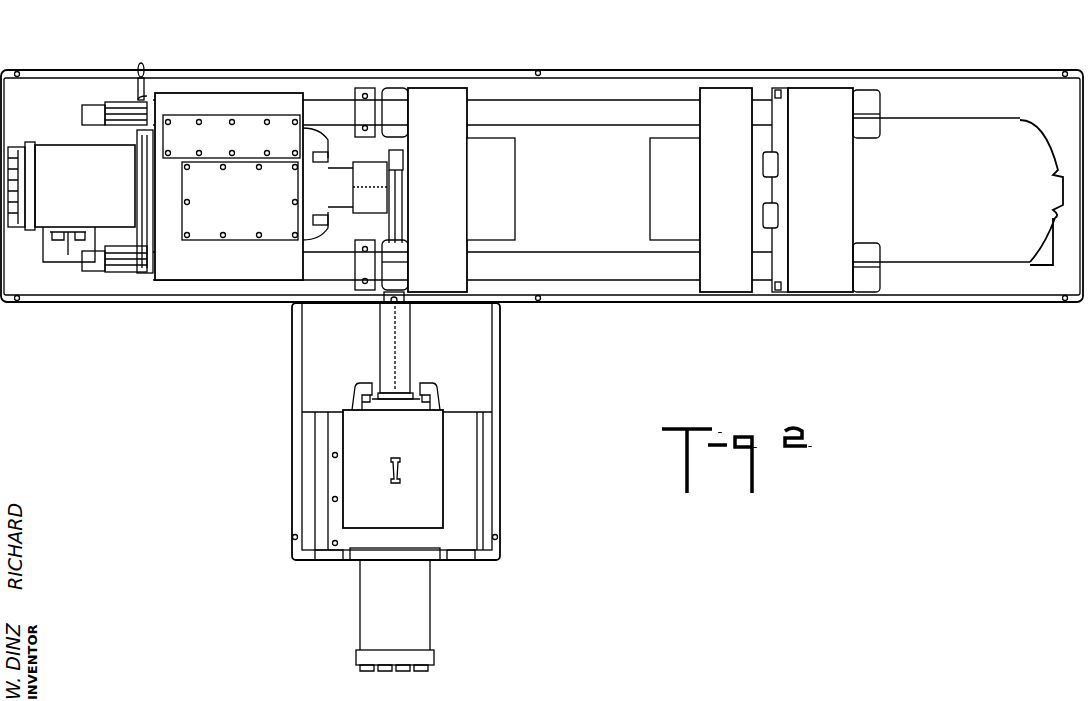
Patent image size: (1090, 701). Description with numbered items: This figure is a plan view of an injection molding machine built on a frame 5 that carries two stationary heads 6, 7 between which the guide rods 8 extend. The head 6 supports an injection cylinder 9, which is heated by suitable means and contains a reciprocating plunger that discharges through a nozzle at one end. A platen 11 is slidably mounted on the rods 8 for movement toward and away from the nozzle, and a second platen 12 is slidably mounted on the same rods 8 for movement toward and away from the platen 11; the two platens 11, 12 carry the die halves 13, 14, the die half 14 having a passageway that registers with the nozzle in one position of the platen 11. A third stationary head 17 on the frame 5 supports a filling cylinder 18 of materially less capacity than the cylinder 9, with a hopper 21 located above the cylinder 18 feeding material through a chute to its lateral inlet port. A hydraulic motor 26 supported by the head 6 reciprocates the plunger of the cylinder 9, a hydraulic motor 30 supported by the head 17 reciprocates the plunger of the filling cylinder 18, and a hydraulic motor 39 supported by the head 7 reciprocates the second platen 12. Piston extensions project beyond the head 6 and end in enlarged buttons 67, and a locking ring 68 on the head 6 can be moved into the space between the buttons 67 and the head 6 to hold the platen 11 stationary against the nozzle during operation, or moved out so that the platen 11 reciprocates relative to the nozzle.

The frame 5 is at (932, 305).
The stationary head 6 is at (262, 267).
The stationary head 7 is at (825, 282).
The guide rods 8 is at (622, 268).
The injection cylinder 9 is at (342, 202).
The platen 11 is at (447, 100).
The second platen 12 is at (717, 97).
The die half 13 is at (653, 168).
The die half 14 is at (508, 160).
The third stationary head 17 is at (468, 515).
The filling cylinder 18 is at (383, 344).
The hopper 21 is at (437, 457).
The hydraulic motor 26 is at (62, 156).
The hydraulic motor 30 is at (420, 623).
The hydraulic motor 39 is at (988, 121).
The enlarged button 67 is at (95, 112).
The locking ring 68 is at (145, 97).